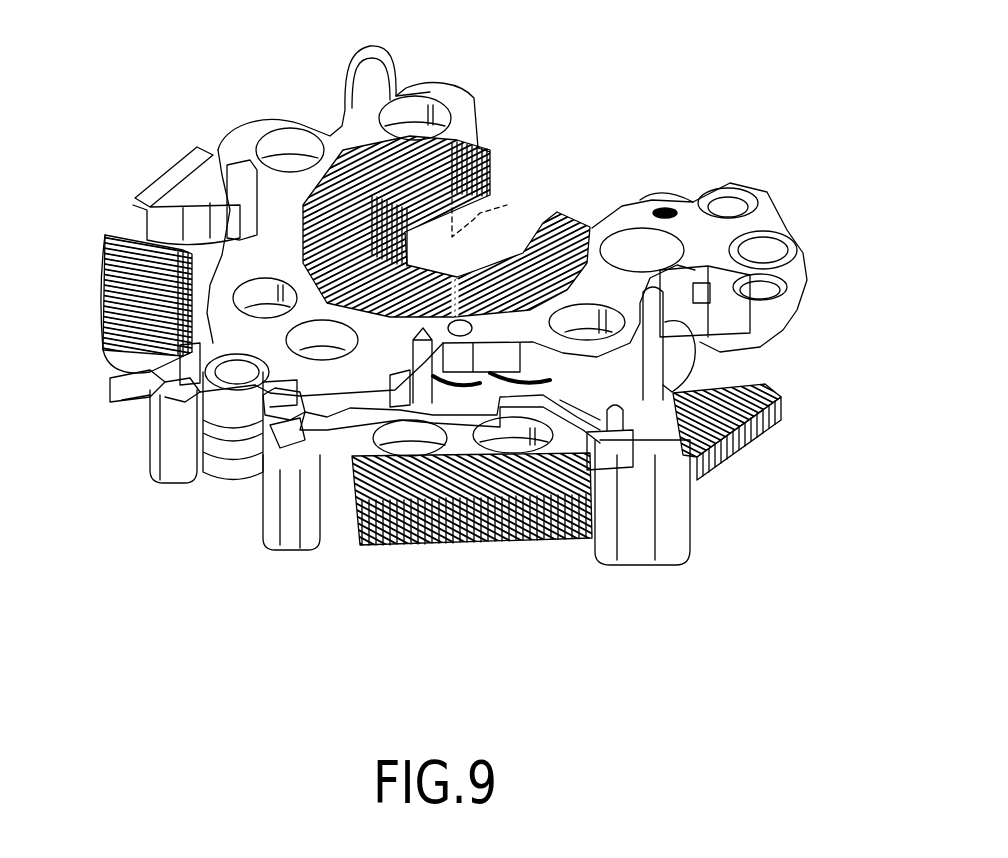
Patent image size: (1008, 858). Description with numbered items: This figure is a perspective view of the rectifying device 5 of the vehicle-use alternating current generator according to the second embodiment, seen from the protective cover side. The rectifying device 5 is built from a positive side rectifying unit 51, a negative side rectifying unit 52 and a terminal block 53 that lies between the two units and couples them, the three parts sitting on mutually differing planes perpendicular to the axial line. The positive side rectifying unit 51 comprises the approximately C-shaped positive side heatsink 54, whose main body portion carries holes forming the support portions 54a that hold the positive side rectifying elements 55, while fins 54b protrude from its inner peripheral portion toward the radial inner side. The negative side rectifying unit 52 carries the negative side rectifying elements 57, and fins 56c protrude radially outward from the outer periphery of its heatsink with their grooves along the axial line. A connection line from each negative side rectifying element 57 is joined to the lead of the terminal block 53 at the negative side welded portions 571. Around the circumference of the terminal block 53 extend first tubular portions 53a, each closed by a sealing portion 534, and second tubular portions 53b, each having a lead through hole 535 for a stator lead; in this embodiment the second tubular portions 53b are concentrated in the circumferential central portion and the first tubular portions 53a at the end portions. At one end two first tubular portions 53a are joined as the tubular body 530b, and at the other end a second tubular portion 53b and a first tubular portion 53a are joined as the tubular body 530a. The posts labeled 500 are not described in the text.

The rectifying device 5 is at (788, 646).
The positive side rectifying unit 51 is at (437, 112).
The negative side rectifying unit 52 is at (122, 376).
The terminal block 53 is at (365, 445).
The first tubular portion 53a is at (170, 158).
The second tubular portion 53b is at (182, 455).
The positive side heatsink 54 is at (458, 128).
The support portion 54a is at (440, 113).
The fins 54b is at (560, 213).
The positive side rectifying element 55 is at (292, 140).
The fins 56c is at (492, 545).
The negative side rectifying element 57 is at (775, 378).
The post 500 is at (135, 400).
The tubular body 530a is at (698, 648).
The tubular body 530b is at (83, 147).
The sealing portion 534 is at (750, 455).
The lead through hole 535 is at (130, 396).
The negative side welded portion 571 is at (772, 290).